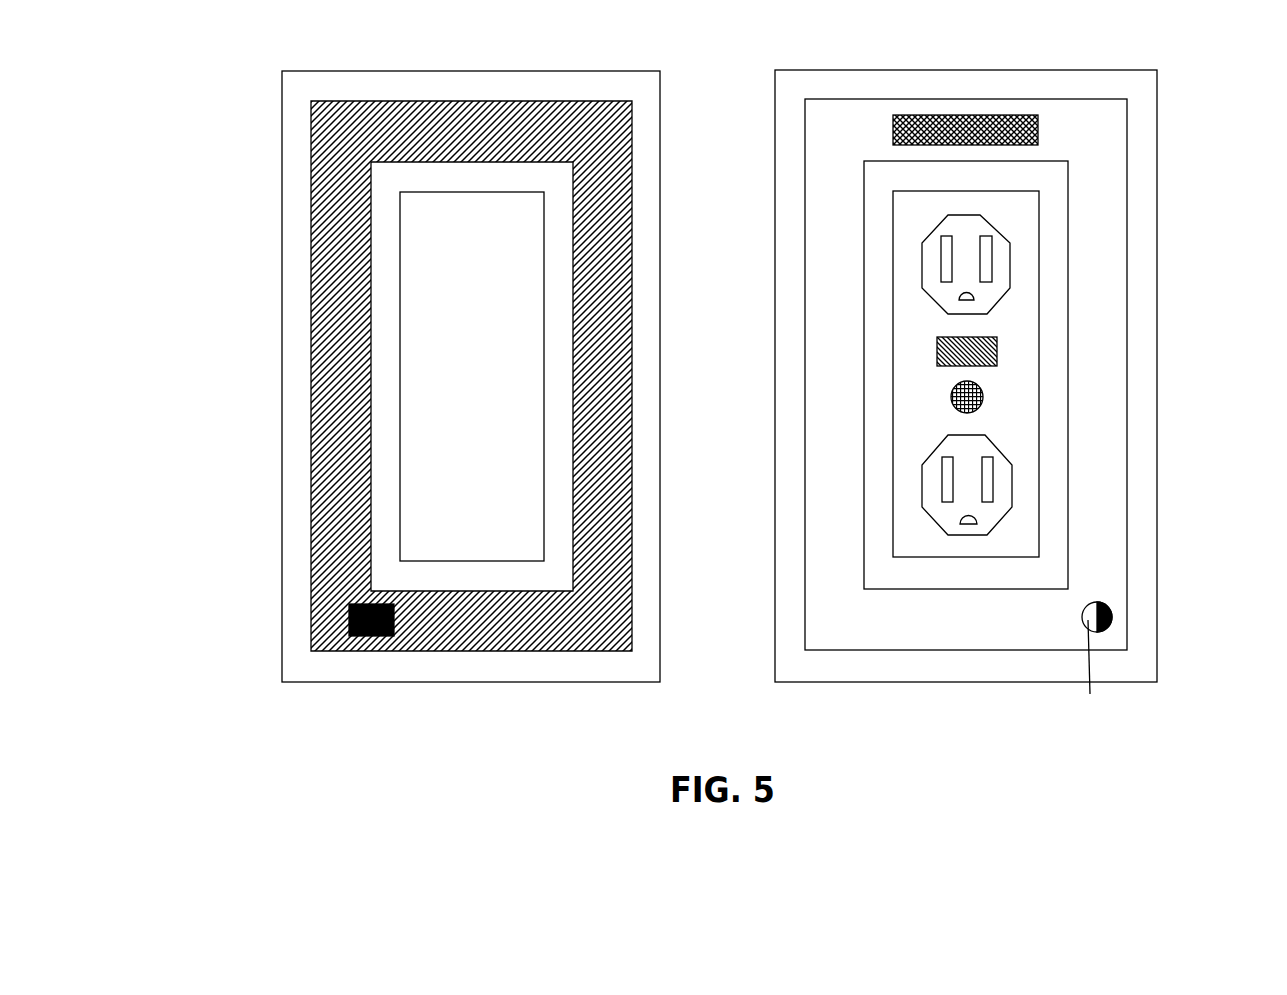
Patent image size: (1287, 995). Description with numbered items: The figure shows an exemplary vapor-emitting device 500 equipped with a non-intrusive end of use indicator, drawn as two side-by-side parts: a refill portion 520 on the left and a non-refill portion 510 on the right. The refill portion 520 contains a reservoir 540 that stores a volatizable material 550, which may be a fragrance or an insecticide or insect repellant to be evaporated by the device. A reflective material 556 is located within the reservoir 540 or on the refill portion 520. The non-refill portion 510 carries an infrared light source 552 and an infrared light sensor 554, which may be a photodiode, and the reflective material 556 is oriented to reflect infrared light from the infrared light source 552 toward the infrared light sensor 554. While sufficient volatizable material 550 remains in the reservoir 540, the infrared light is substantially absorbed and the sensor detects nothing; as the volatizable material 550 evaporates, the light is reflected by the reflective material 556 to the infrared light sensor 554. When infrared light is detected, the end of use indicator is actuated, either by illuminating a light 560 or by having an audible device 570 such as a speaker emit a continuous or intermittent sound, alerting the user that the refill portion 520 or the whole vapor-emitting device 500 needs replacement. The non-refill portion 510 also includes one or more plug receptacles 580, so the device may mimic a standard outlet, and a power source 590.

The vapor-emitting device 500 is at (245, 67).
The non-refill portion 510 is at (957, 70).
The refill portion 520 is at (463, 70).
The reservoir 540 is at (311, 270).
The volatizable material 550 is at (335, 376).
The infrared light source 552 is at (1112, 616).
The infrared light sensor 554 is at (1093, 667).
The reflective material 556 is at (349, 613).
The light 560 is at (997, 340).
The audible device 570 is at (983, 388).
The plug receptacles 580 is at (1011, 257).
The power source 590 is at (937, 128).